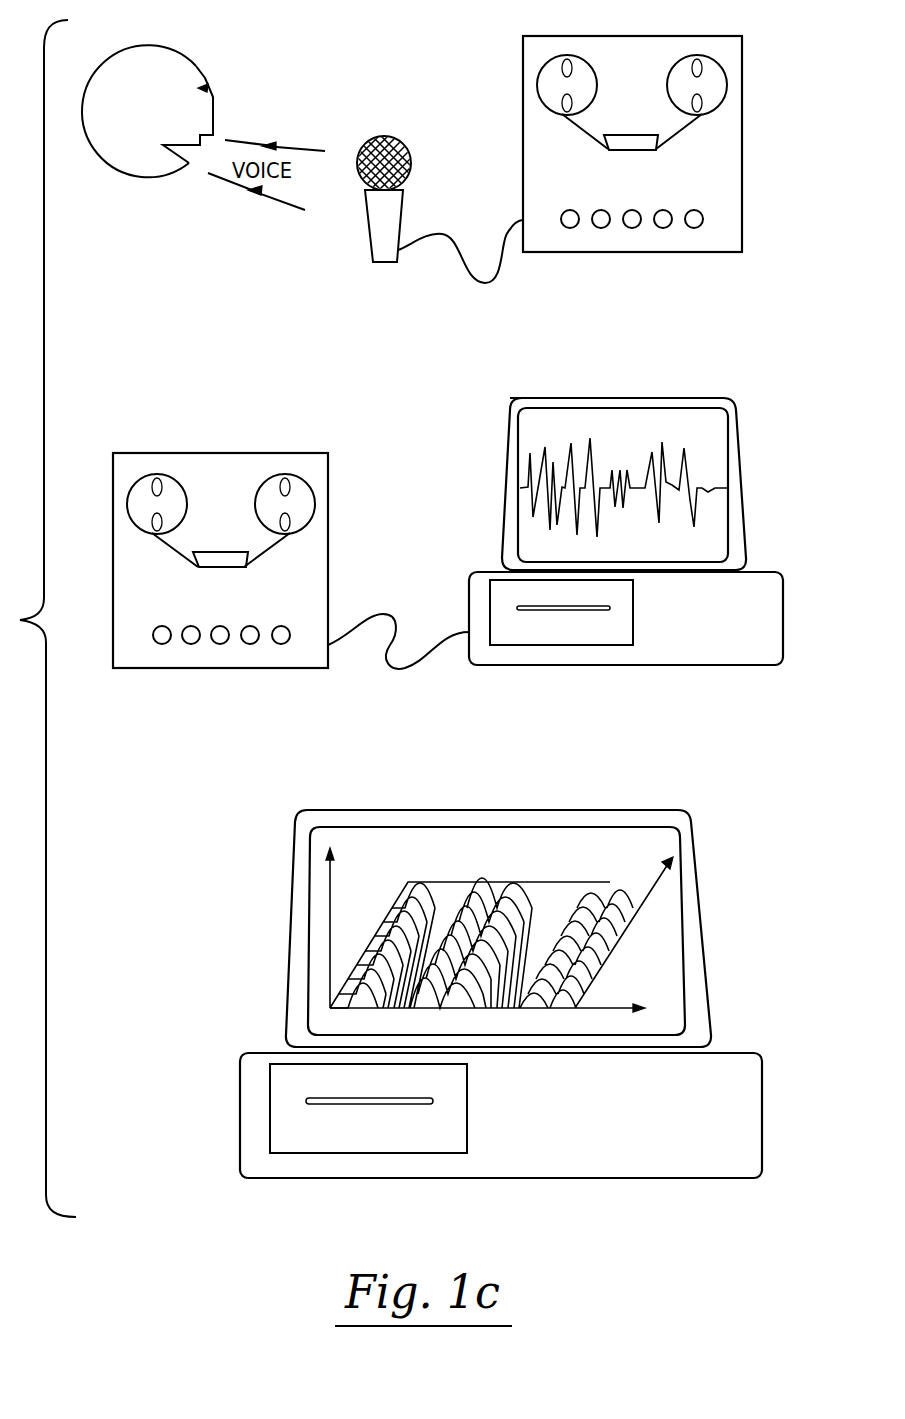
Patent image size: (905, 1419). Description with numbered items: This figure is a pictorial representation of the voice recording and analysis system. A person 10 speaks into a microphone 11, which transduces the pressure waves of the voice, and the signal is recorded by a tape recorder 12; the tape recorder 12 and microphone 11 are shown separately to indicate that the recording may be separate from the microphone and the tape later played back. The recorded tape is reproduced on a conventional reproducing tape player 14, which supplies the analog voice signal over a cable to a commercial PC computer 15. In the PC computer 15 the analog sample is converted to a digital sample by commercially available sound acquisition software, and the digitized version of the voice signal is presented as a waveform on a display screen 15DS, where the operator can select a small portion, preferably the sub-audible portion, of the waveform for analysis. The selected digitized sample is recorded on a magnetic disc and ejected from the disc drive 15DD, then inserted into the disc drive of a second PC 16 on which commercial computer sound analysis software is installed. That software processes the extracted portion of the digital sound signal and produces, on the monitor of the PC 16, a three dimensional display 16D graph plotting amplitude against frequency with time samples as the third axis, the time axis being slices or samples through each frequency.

The person 10 is at (178, 57).
The microphone 11 is at (397, 147).
The tape recorder 12 is at (582, 45).
The reproducing tape player 14 is at (220, 460).
The PC computer 15 is at (580, 509).
The display screen 15DS is at (530, 430).
The disc drive 15DD is at (498, 592).
The PC 16 is at (518, 1007).
The three dimensional display 16D is at (598, 897).